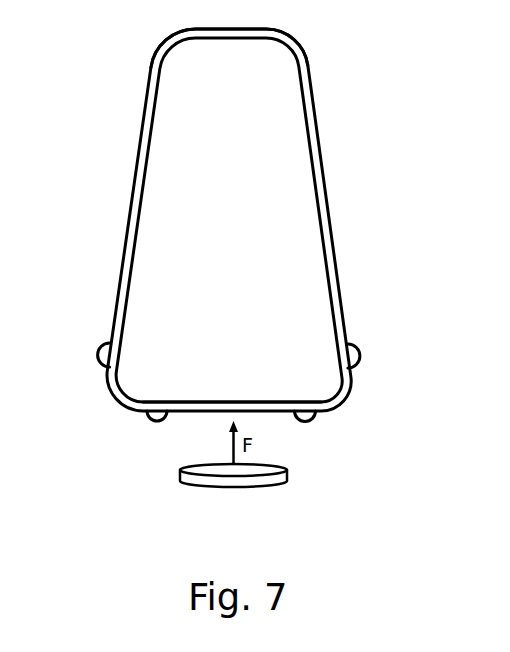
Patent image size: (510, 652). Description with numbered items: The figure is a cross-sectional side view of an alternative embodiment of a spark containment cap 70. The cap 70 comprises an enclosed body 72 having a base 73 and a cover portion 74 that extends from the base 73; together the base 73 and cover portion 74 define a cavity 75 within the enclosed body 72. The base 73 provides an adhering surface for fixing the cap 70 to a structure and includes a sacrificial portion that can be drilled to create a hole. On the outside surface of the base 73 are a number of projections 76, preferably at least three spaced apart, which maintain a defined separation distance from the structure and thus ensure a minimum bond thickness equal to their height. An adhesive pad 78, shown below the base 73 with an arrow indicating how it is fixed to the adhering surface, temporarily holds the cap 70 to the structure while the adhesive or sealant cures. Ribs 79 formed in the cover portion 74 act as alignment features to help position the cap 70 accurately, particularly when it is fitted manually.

The spark containment cap 70 is at (233, 265).
The enclosed body 72 is at (121, 274).
The base 73 is at (282, 408).
The cover portion 74 is at (145, 105).
The cavity 75 is at (278, 197).
The projections 76 is at (155, 420).
The adhesive pad 78 is at (232, 478).
The ribs 79 is at (101, 353).